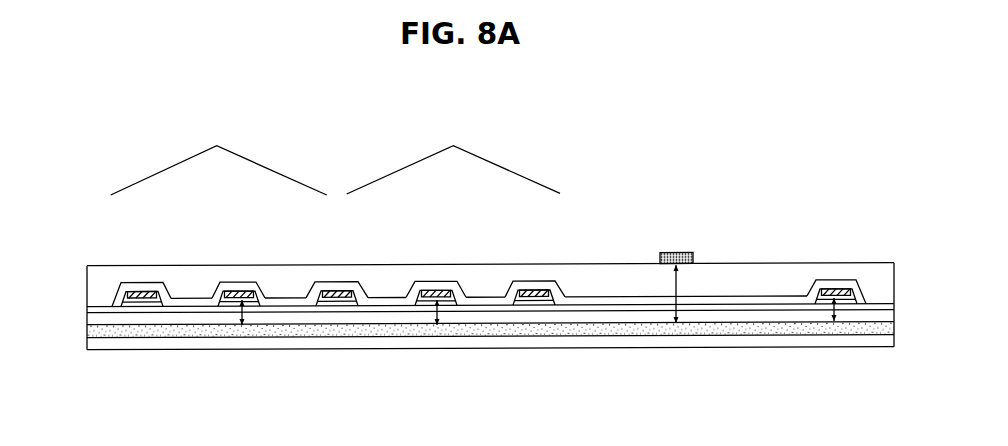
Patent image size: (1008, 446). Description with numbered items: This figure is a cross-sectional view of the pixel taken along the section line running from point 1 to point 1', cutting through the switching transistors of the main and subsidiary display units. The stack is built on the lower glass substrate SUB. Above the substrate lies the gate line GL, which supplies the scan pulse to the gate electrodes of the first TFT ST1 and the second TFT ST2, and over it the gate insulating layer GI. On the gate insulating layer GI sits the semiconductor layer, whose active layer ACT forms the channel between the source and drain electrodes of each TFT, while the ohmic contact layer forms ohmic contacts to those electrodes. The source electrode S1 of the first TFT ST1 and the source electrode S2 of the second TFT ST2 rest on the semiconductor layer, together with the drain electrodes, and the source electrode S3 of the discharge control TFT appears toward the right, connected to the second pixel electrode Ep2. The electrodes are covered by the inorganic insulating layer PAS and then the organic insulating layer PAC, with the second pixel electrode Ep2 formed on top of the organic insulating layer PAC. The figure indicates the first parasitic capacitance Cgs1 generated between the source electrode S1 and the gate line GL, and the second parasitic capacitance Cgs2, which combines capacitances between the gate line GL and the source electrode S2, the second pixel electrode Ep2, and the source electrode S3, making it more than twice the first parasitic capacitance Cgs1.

The organic insulating layer PAC is at (88, 277).
The inorganic insulating layer PAS is at (88, 306).
The gate insulating layer GI is at (88, 318).
The gate line GL is at (88, 330).
The lower glass substrate SUB is at (88, 347).
The active layer ACT is at (188, 313).
The source electrode of the first TFT S1 is at (240, 291).
The source electrode of the second TFT S2 is at (437, 290).
The source electrode of the discharge control TFT S3 is at (834, 289).
The first TFT ST1 is at (219, 157).
The second TFT ST2 is at (453, 157).
The second pixel electrode Ep2 is at (676, 252).
The first parasitic capacitance Cgs1 is at (264, 313).
The second parasitic capacitance Cgs2 is at (657, 296).
The section line 1 is at (87, 360).
The section line 1' is at (896, 358).